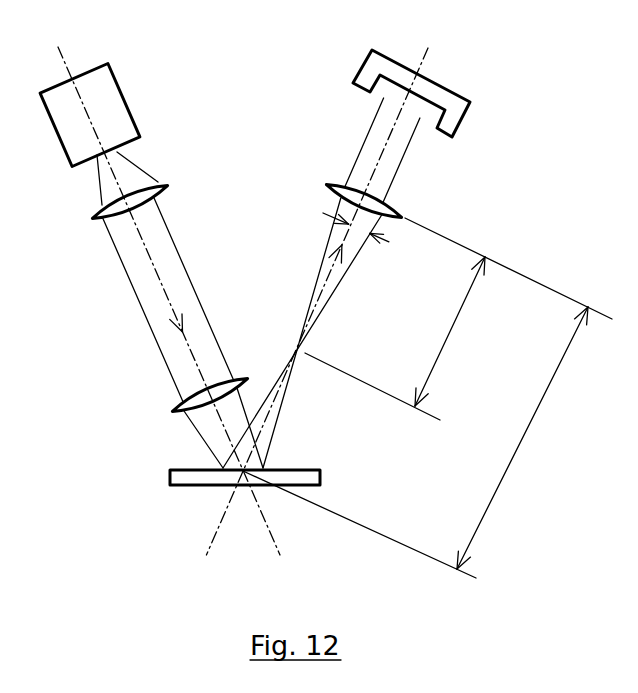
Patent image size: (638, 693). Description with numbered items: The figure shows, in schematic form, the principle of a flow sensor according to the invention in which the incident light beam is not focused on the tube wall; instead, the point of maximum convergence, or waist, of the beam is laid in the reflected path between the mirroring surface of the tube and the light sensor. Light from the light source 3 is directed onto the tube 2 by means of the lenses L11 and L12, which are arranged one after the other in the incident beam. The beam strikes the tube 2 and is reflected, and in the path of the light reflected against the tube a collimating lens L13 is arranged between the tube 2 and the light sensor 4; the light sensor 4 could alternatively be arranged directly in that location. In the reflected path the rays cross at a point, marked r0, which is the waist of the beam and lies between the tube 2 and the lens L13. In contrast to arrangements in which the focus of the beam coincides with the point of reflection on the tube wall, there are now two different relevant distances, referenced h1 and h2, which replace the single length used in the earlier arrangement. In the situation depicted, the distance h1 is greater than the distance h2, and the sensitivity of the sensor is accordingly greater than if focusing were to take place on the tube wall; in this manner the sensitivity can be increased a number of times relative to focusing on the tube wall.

The tube 2 is at (200, 487).
The light source 3 is at (112, 103).
The light sensor 4 is at (372, 63).
The lens L11 is at (95, 210).
The lens L12 is at (174, 402).
The collimating lens L13 is at (387, 201).
The distance h1 is at (522, 438).
The distance h2 is at (456, 331).
The reflected beam crossing point r0 is at (300, 360).